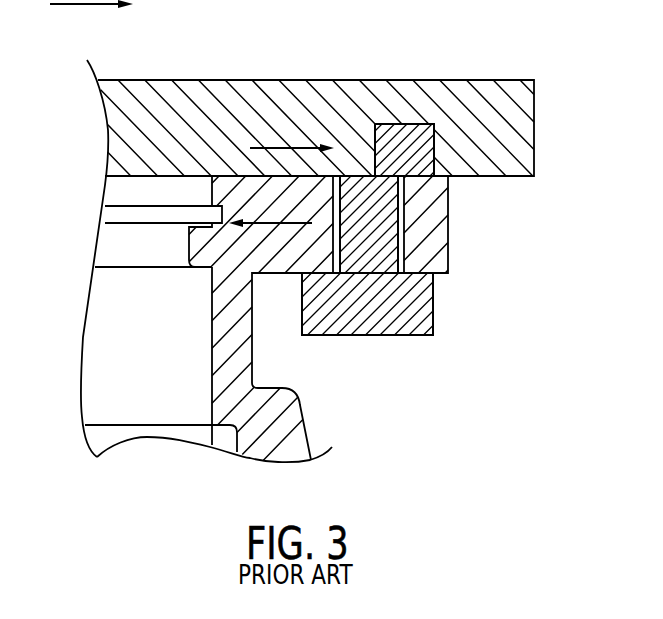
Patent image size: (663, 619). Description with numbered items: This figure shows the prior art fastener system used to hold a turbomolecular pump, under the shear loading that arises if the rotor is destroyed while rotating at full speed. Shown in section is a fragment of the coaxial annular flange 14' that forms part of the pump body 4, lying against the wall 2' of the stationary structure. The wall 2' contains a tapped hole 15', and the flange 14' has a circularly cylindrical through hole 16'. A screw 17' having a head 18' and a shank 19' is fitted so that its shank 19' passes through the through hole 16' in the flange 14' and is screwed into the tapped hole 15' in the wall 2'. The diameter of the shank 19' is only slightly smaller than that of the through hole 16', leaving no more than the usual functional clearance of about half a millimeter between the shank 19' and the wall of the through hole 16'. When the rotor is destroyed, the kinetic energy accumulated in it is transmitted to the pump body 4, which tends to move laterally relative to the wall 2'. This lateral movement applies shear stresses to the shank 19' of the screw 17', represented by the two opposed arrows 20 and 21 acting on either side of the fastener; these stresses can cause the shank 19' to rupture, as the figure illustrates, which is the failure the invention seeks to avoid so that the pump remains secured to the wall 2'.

The wall of the stationary structure 2' is at (326, 258).
The pump body 4 is at (298, 438).
The coaxial annular flange 14' is at (341, 318).
The tapped hole 15' is at (411, 198).
The through hole 16' is at (422, 227).
The screw 17' is at (414, 308).
The head 18' is at (367, 330).
The shank 19' is at (398, 108).
The arrow 20 is at (268, 149).
The arrow 21 is at (263, 227).